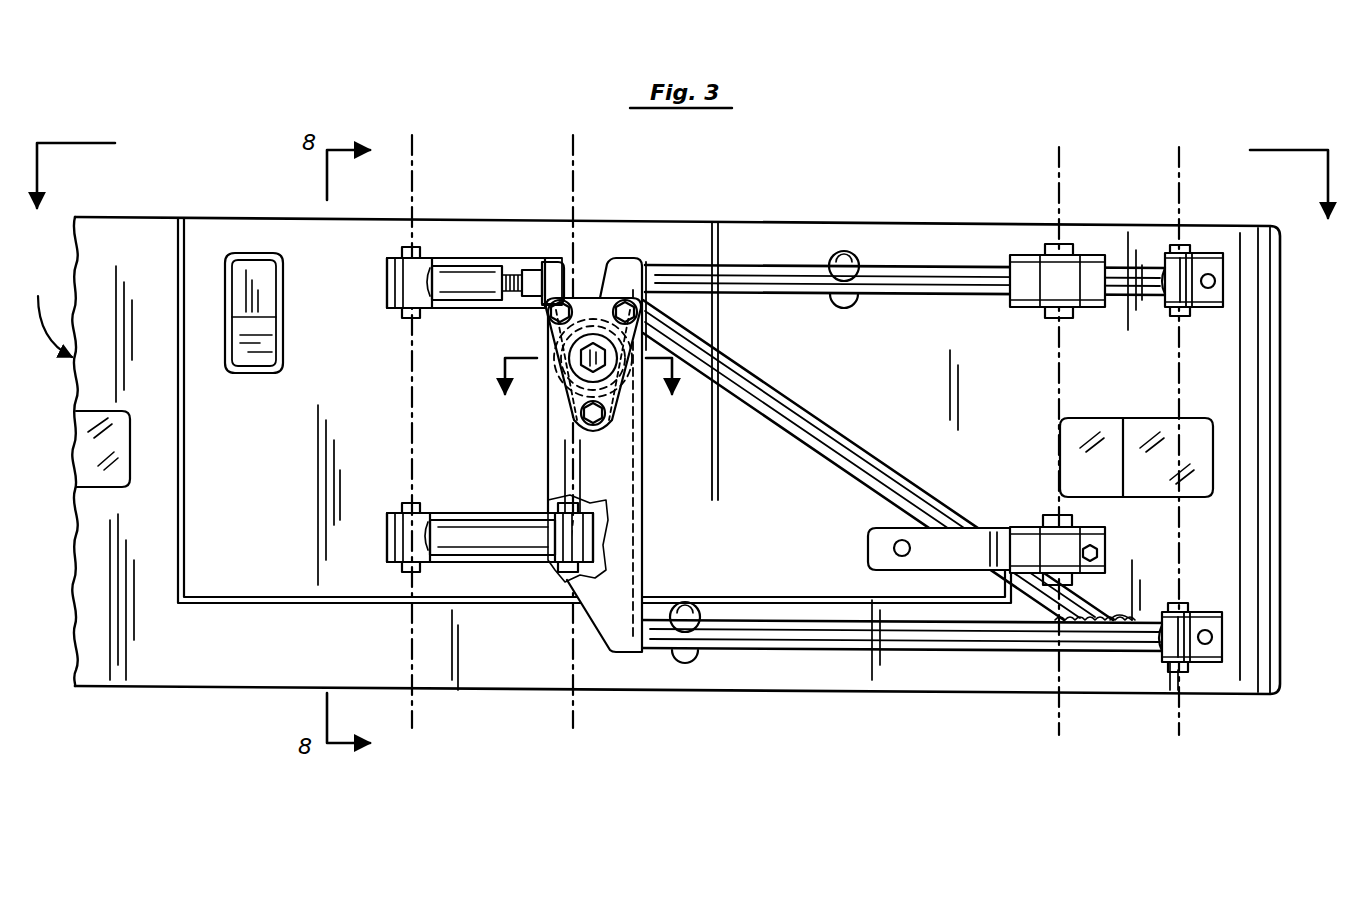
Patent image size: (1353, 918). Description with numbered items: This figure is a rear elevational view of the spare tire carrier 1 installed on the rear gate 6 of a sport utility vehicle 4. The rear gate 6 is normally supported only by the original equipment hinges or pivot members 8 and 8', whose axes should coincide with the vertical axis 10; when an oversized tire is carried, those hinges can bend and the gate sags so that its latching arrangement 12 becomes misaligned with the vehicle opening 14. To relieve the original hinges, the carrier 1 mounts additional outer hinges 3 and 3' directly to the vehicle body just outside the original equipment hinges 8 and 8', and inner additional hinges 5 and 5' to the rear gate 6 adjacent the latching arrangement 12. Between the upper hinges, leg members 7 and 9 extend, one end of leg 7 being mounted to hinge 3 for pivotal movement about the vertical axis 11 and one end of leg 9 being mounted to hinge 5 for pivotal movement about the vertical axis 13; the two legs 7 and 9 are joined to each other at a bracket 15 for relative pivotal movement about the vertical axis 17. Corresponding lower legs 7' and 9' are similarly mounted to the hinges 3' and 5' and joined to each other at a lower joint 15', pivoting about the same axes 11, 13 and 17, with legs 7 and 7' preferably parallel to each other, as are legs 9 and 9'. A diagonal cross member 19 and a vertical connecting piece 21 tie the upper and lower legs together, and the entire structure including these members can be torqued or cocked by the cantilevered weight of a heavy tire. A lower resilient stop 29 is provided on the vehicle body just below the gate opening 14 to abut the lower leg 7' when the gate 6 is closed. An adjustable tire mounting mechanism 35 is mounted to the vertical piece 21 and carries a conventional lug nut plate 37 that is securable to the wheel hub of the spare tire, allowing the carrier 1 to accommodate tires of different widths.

The carrier 1 is at (1090, 126).
The additional hinge 3 is at (1201, 246).
The additional hinge 3' is at (1196, 672).
The sport utility vehicle 4 is at (675, 235).
The inner additional hinge 5 is at (433, 282).
The inner additional hinge 5' is at (461, 537).
The rear gate 6 is at (644, 456).
The leg member 7 is at (906, 230).
The lower leg 7' is at (903, 683).
The original equipment hinge 8 is at (1047, 242).
The original equipment hinge 8' is at (986, 513).
The leg member 9 is at (587, 390).
The lower leg 9' is at (492, 583).
The vertical axis 10 is at (1059, 160).
The vertical axis 11 is at (1179, 172).
The latching arrangement 12 is at (252, 289).
The vertical axis 13 is at (413, 172).
The vehicle opening 14 is at (217, 603).
The bracket 15 is at (491, 299).
The joint 15' is at (551, 544).
The vertical axis 17 is at (573, 172).
The diagonal cross member 19 is at (850, 440).
The vertical connecting piece 21 is at (622, 537).
The lower resilient stop 29 is at (846, 252).
The tire mounting mechanism 35 is at (544, 331).
The lug nut plate 37 is at (665, 338).